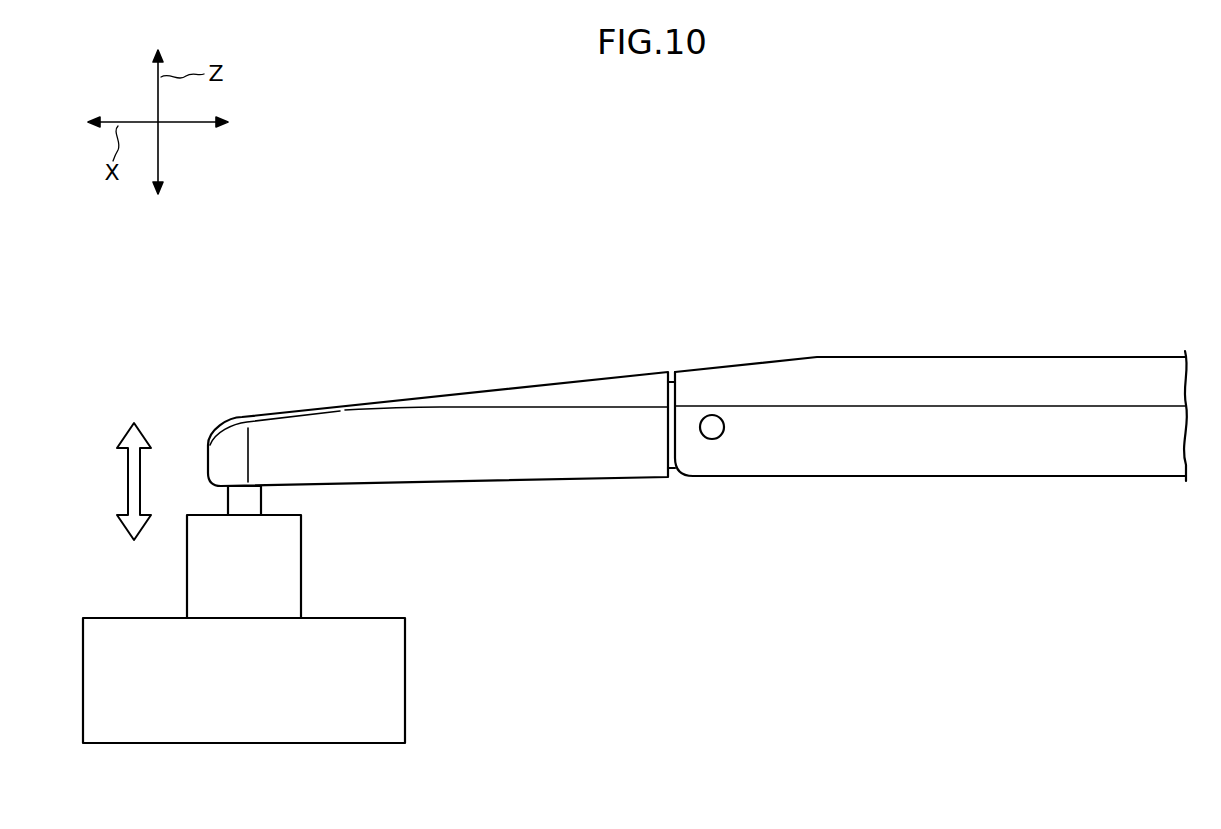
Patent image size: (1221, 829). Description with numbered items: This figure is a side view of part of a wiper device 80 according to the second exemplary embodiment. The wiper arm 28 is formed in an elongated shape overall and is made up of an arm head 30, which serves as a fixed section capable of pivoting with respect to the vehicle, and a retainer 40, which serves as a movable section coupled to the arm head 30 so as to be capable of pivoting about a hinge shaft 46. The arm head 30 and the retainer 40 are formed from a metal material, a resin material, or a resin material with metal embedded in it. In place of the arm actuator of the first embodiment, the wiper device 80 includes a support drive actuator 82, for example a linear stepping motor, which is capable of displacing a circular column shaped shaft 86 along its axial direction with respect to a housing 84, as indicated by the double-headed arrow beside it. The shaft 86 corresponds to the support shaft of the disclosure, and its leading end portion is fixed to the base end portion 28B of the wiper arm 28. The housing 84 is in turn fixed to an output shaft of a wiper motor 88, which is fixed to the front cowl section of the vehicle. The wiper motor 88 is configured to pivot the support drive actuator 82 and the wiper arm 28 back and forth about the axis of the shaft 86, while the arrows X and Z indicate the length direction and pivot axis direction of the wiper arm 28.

The wiper device 80 is at (617, 236).
The wiper arm 28 is at (790, 356).
The base end portion 28B is at (250, 415).
The arm head 30 is at (500, 387).
The retainer 40 is at (1027, 357).
The hinge shaft 46 is at (712, 439).
The support drive actuator 82 is at (185, 582).
The housing 84 is at (301, 563).
The shaft 86 is at (262, 500).
The wiper motor 88 is at (405, 672).